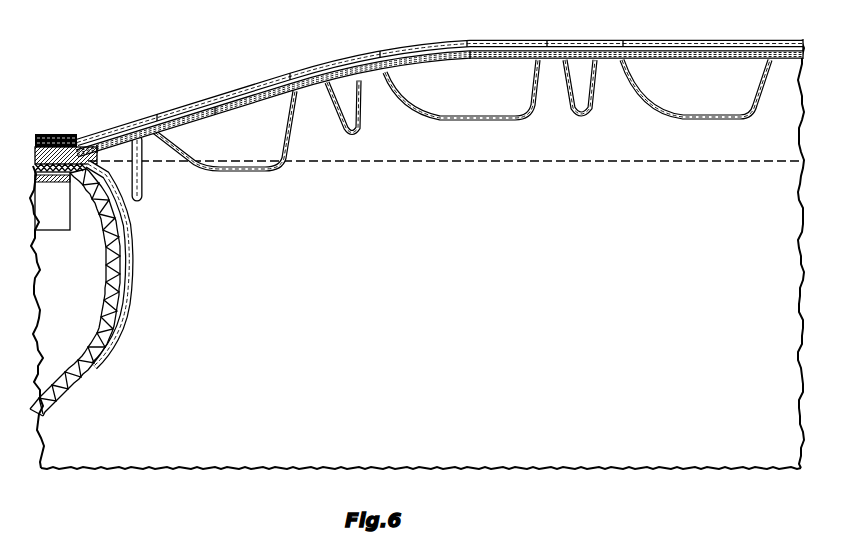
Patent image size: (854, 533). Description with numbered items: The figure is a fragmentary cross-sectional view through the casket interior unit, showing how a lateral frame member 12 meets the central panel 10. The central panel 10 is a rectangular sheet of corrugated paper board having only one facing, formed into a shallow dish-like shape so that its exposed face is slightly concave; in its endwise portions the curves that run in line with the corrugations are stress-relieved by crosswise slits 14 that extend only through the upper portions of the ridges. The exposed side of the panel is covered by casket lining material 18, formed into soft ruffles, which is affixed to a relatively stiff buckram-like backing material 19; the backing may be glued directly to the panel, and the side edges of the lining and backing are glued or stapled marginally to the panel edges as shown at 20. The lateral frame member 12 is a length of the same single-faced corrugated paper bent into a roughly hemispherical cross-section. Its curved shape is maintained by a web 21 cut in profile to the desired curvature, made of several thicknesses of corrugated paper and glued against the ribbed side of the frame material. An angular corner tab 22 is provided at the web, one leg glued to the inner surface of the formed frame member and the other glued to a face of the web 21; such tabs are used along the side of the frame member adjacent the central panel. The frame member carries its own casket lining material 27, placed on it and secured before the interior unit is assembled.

The central panel 10 is at (440, 84).
The lateral frame member 12 is at (96, 317).
The crosswise slits 14 is at (171, 109).
The casket lining material 18 is at (481, 122).
The backing material 19 is at (451, 61).
The glued or stapled edges 20 is at (58, 127).
The web 21 is at (54, 301).
The angular corner tab 22 is at (58, 212).
The casket lining material 27 is at (131, 283).